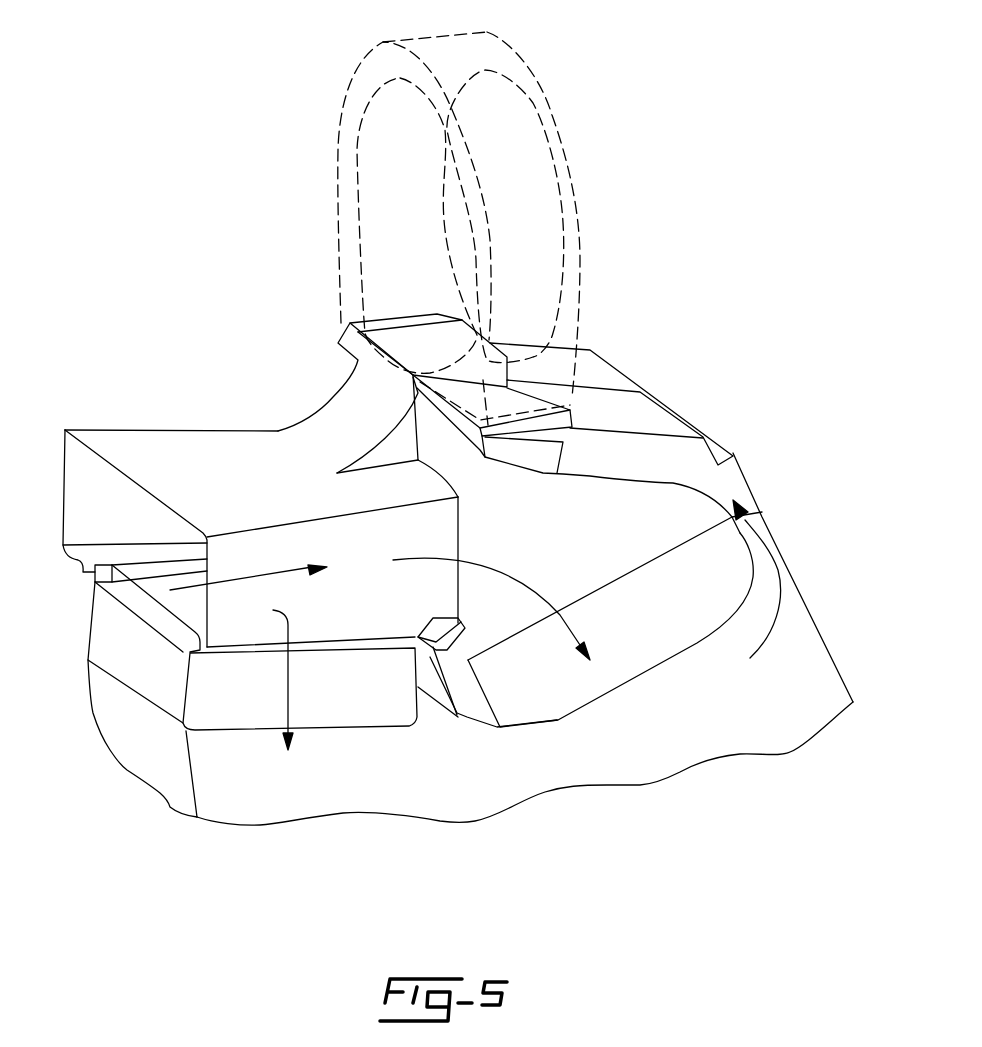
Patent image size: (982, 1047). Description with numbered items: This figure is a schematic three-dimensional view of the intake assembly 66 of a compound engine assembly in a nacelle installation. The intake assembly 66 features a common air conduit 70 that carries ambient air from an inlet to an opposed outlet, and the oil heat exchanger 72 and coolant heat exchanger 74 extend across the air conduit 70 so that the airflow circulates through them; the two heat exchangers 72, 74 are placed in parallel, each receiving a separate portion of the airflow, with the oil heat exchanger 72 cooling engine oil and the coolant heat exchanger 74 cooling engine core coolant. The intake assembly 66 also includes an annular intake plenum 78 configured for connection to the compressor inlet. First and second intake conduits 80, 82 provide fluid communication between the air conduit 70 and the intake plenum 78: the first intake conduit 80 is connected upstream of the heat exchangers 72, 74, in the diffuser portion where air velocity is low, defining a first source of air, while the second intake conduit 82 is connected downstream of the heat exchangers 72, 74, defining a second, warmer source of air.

The intake assembly 66 is at (690, 193).
The air conduit 70 is at (125, 503).
The oil heat exchanger 72 is at (330, 700).
The coolant heat exchanger 74 is at (615, 648).
The intake plenum 78 is at (510, 112).
The first intake conduit 80 is at (360, 418).
The second intake conduit 82 is at (660, 460).